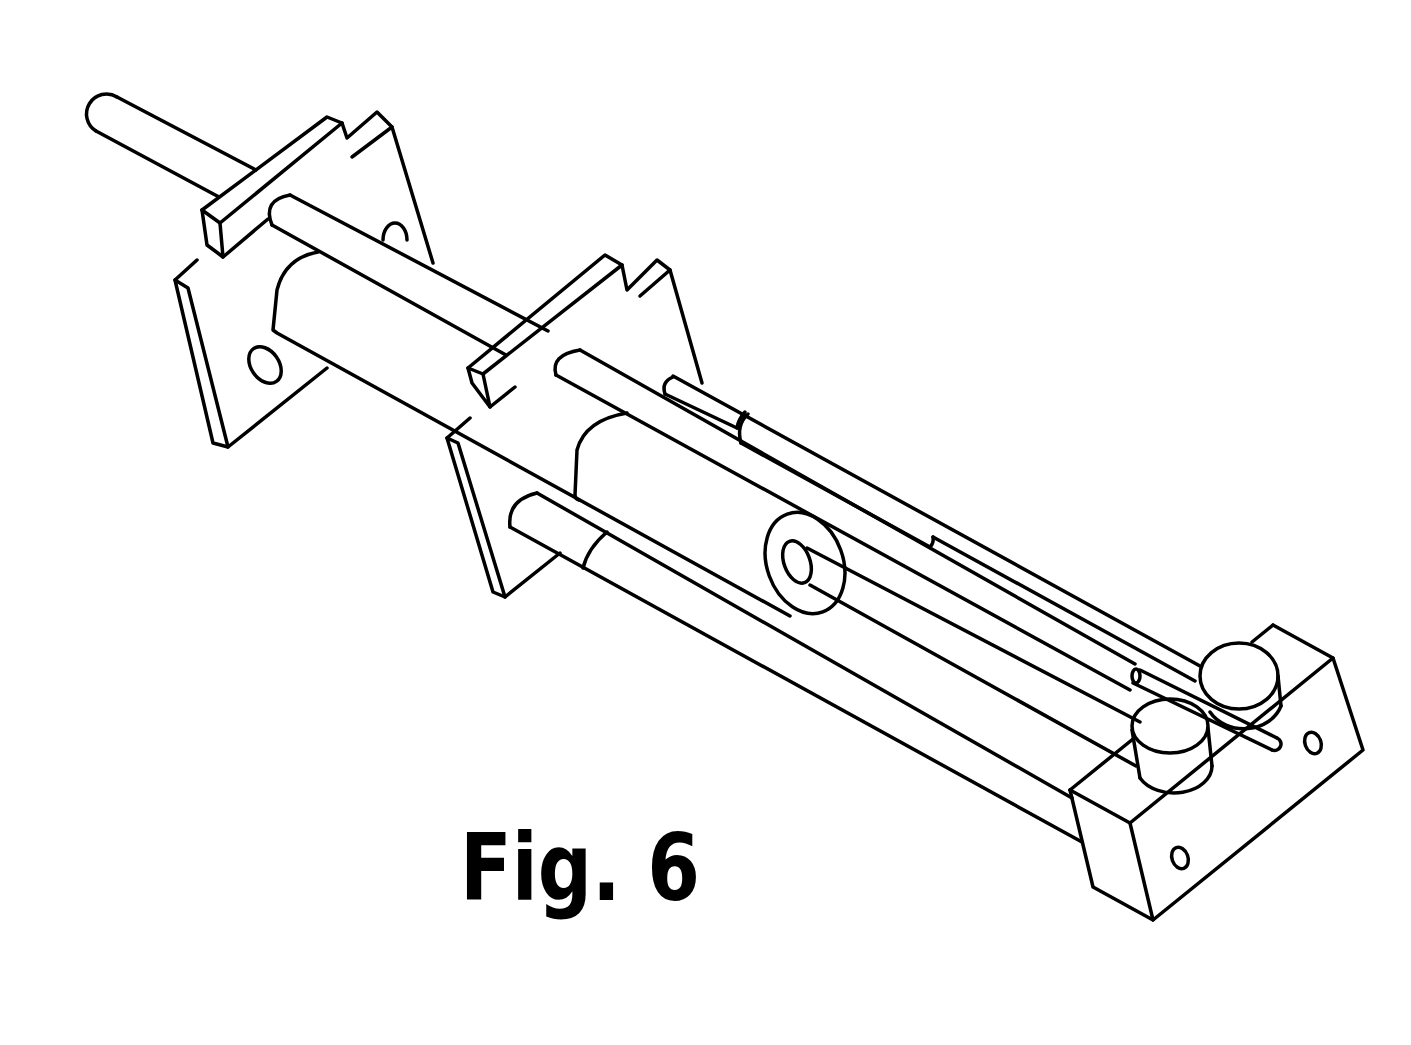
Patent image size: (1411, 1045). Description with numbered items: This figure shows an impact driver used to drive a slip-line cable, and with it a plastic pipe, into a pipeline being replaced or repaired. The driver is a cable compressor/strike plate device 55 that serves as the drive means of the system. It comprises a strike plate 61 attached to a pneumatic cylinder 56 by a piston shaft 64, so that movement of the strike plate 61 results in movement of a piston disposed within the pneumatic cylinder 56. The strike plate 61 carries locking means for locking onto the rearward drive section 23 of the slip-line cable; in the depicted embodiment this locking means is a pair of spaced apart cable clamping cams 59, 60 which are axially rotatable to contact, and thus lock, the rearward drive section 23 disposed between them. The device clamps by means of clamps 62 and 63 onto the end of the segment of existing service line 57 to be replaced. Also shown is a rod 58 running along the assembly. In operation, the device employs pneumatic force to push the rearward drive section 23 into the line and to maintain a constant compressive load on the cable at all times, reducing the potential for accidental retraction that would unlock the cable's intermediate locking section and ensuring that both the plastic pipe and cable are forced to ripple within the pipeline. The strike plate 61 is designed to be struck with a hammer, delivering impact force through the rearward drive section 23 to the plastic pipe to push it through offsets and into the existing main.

The rearward drive section 23 is at (1277, 742).
The cable compressor/strike plate device 55 is at (970, 285).
The pneumatic cylinder 56 is at (707, 583).
The existing service line 57 is at (473, 290).
The upper rod with sleeve 58 is at (930, 547).
The cable clamping cam 59 is at (1132, 790).
The cable clamping cam 60 is at (1236, 648).
The strike plate 61 is at (1262, 803).
The clamp 62 is at (678, 300).
The clamp 63 is at (393, 131).
The piston shaft 64 is at (952, 667).